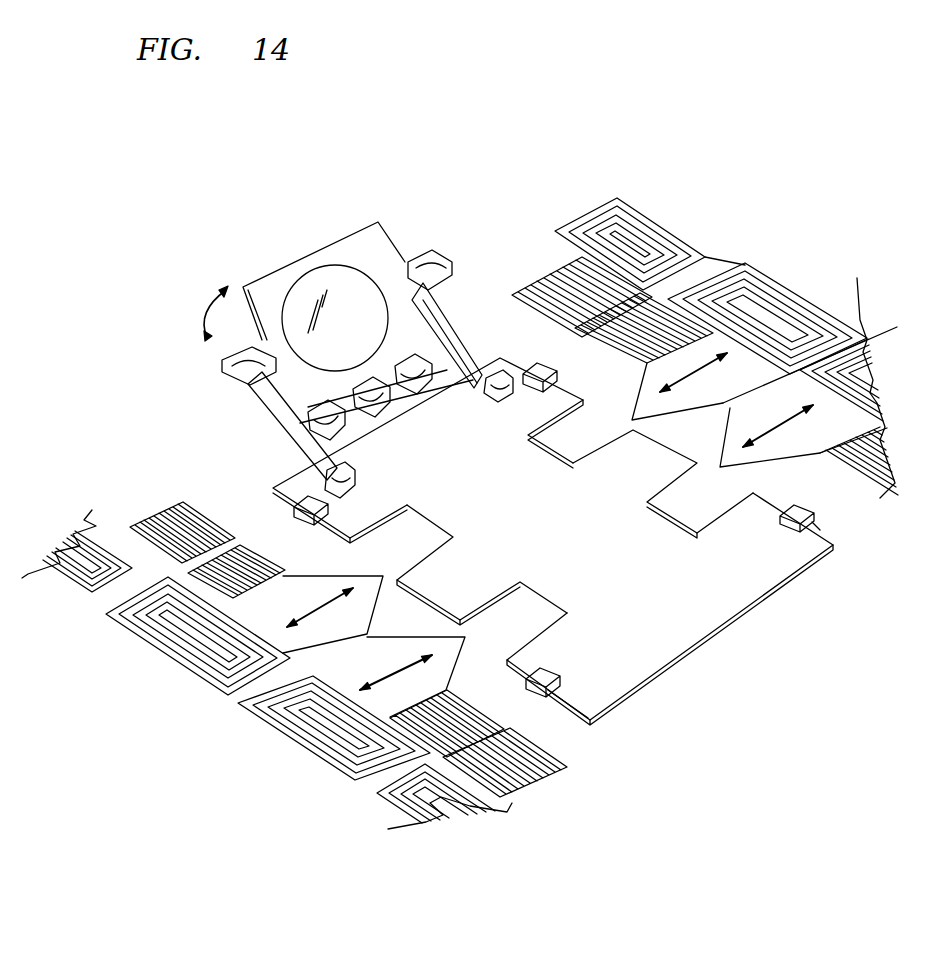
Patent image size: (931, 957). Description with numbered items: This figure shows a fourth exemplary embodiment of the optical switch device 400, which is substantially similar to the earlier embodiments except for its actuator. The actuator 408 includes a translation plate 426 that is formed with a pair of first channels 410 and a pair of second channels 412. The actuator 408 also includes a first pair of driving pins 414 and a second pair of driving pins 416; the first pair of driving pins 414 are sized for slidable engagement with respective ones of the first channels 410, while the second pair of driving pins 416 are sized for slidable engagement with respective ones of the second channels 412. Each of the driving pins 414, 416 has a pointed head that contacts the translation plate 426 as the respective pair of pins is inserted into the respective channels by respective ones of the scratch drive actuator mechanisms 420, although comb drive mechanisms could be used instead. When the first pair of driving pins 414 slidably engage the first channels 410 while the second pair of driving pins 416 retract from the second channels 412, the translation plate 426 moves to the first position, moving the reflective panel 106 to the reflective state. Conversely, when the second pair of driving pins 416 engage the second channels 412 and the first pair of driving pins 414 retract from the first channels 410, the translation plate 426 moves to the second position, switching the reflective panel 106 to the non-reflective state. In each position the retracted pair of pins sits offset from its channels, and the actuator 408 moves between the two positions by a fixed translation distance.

The optical switch device 400 is at (330, 186).
The reflective panel 106 is at (367, 243).
The actuator 408 is at (577, 200).
The scratch drive actuator mechanisms 420 is at (733, 268).
The first pair of driving pins 414 is at (643, 407).
The second pair of driving pins 416 is at (727, 453).
The first channels 410 is at (403, 530).
The second channels 412 is at (530, 610).
The translation plate 426 is at (697, 617).